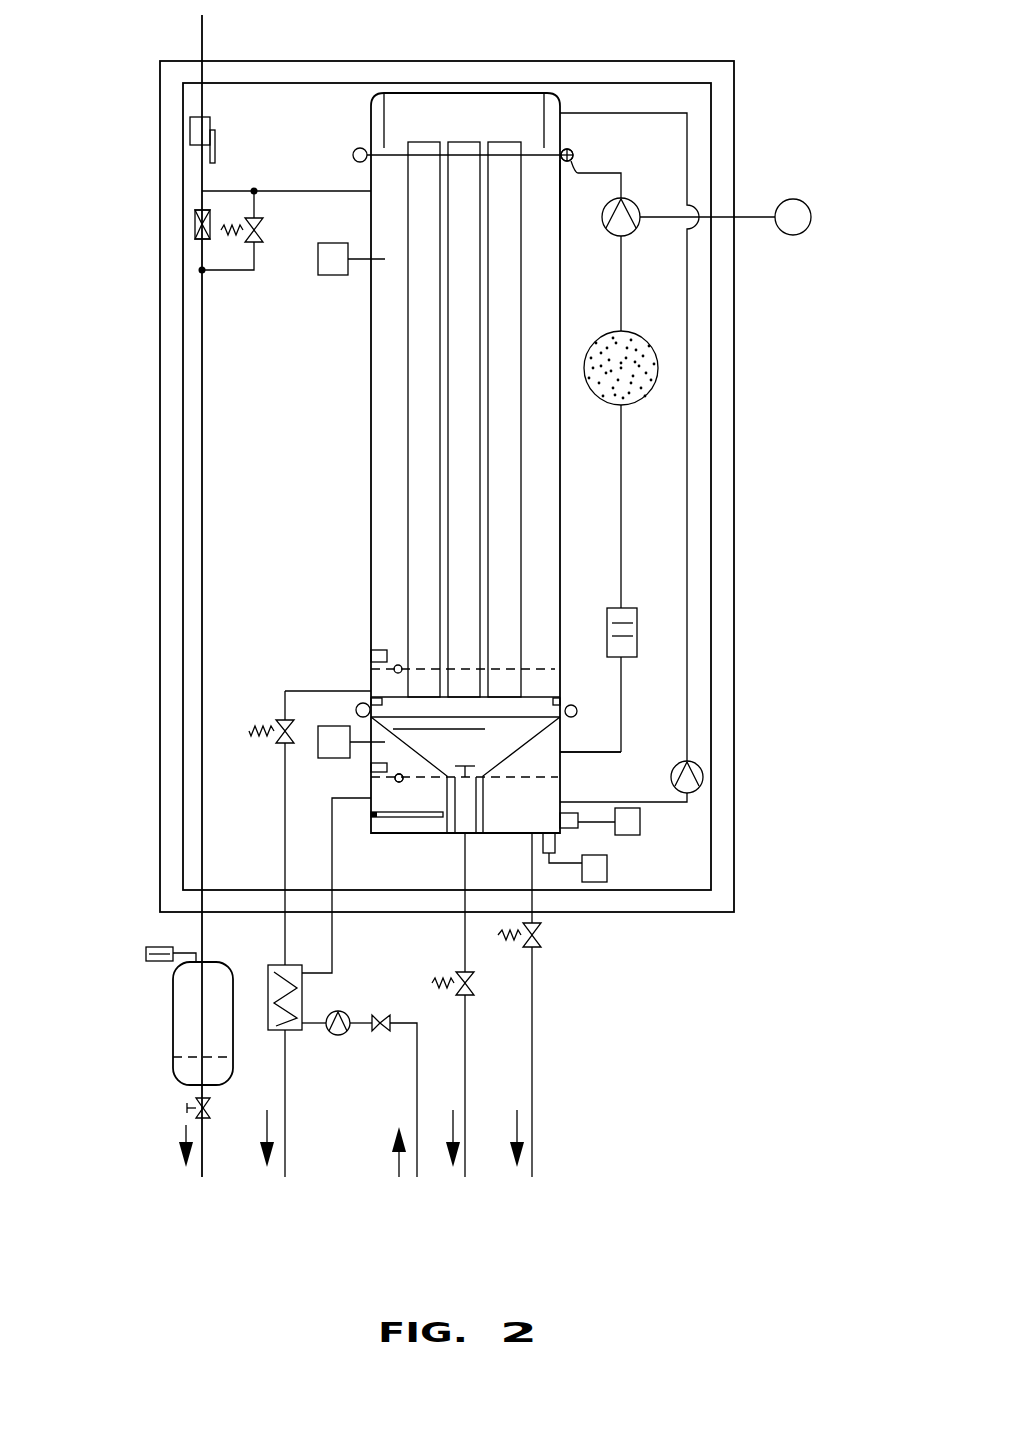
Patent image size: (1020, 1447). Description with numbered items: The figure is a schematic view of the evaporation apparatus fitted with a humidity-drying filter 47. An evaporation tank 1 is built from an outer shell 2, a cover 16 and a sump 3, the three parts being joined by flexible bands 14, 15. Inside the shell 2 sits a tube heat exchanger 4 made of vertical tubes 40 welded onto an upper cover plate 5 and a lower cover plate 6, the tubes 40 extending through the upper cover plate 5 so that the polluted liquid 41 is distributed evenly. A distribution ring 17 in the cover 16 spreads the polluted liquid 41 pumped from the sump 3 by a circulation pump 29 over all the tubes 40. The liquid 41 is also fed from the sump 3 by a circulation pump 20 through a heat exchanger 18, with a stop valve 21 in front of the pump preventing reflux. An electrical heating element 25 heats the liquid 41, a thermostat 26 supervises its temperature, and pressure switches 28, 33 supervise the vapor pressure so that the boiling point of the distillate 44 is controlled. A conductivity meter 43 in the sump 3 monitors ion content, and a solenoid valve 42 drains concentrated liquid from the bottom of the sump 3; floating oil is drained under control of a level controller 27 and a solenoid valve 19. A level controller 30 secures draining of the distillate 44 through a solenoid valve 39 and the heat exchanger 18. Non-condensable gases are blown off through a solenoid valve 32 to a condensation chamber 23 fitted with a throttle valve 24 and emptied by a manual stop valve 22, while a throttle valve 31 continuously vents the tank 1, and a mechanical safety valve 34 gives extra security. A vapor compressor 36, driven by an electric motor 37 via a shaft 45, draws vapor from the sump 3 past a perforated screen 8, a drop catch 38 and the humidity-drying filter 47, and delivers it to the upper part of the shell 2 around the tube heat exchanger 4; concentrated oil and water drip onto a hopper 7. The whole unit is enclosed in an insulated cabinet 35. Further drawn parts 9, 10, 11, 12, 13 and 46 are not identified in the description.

The evaporation tank 1 is at (371, 330).
The outer shell 2 is at (560, 200).
The sump 3 is at (562, 737).
The tube heat exchanger 4 is at (482, 300).
The upper cover plate 5 is at (536, 148).
The lower cover plate 6 is at (552, 694).
The hopper 7 is at (556, 776).
The perforated screen 8 is at (485, 730).
The outlet 9 is at (483, 790).
The drain line 10 is at (465, 818).
The gas connection 11 is at (573, 155).
The connection 12 is at (573, 150).
The lower plate 13 is at (575, 716).
The flexible band 14 is at (577, 706).
The flexible band 15 is at (600, 173).
The cover 16 is at (455, 93).
The distribution ring 17 is at (384, 115).
The heat exchanger 18 is at (300, 993).
The solenoid valve 19 is at (473, 988).
The circulation pump 20 is at (337, 1035).
The stop valve 21 is at (380, 1015).
The manual stop valve 22 is at (187, 1108).
The condensation chamber 23 is at (187, 997).
The throttle valve 24 is at (145, 953).
The electrical heating element 25 is at (371, 813).
The thermostat 26 is at (573, 819).
The level controller 27 is at (371, 765).
The pressure switch 28 is at (318, 752).
The circulation pump 29 is at (703, 772).
The level controller 30 is at (371, 658).
The throttle valve 31 is at (194, 224).
The solenoid valve 32 is at (263, 232).
The pressure switch 33 is at (318, 270).
The mechanical safety valve 34 is at (190, 127).
The insulated cabinet 35 is at (168, 93).
The vapor compressor 36 is at (632, 233).
The electric motor 37 is at (811, 222).
The drop catch 38 is at (637, 650).
The solenoid valve 39 is at (283, 720).
The tubes 40 is at (528, 265).
The polluted liquid 41 is at (529, 828).
The solenoid valve 42 is at (540, 940).
The conductivity meter 43 is at (540, 863).
The distillate 44 is at (385, 682).
The shaft 45 is at (760, 215).
The nozzle 46 is at (399, 782).
The humidity-drying filter 47 is at (642, 370).